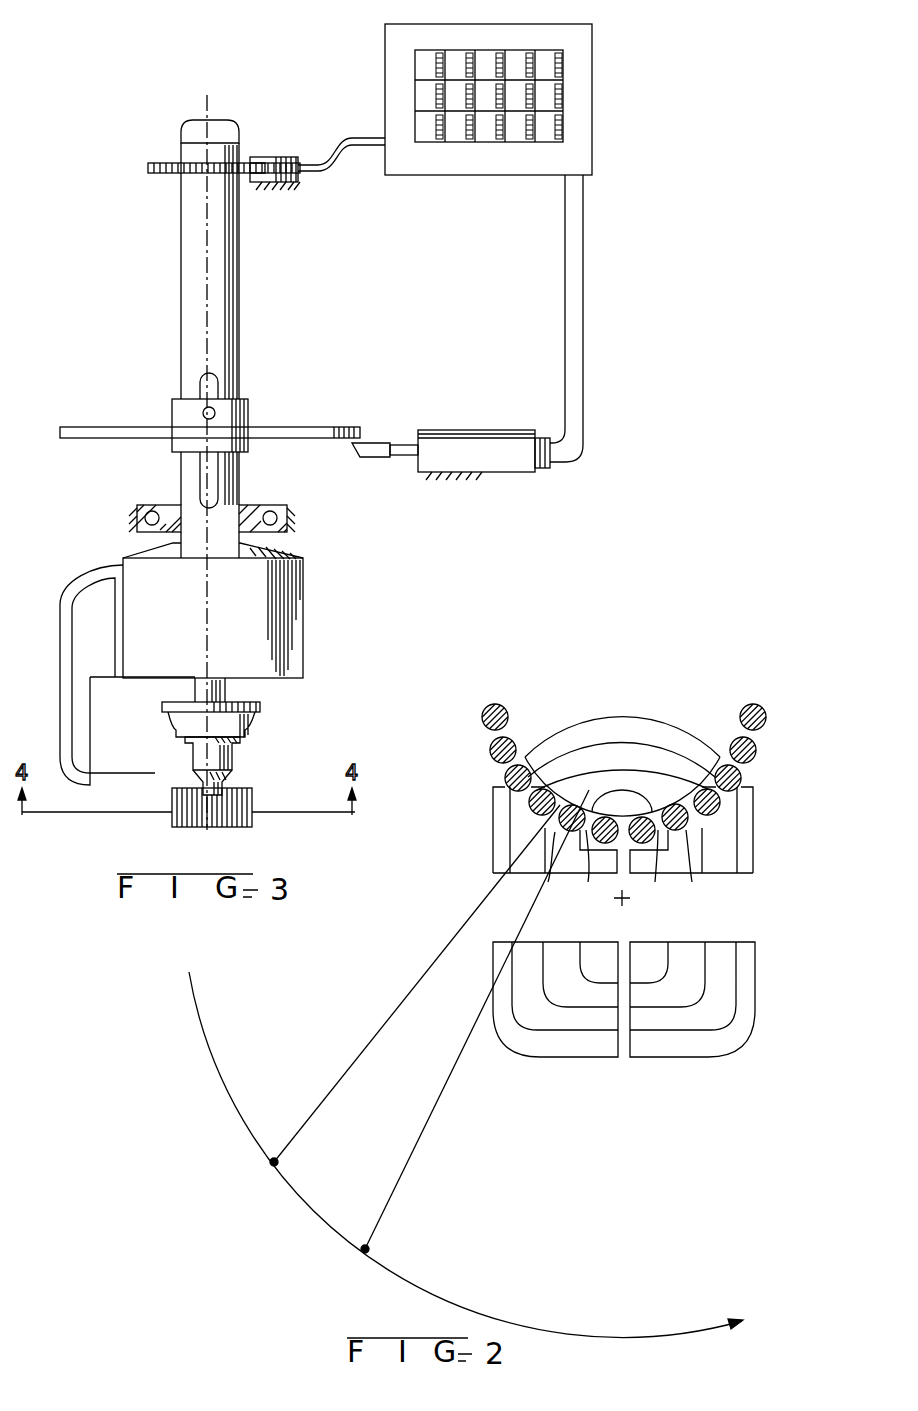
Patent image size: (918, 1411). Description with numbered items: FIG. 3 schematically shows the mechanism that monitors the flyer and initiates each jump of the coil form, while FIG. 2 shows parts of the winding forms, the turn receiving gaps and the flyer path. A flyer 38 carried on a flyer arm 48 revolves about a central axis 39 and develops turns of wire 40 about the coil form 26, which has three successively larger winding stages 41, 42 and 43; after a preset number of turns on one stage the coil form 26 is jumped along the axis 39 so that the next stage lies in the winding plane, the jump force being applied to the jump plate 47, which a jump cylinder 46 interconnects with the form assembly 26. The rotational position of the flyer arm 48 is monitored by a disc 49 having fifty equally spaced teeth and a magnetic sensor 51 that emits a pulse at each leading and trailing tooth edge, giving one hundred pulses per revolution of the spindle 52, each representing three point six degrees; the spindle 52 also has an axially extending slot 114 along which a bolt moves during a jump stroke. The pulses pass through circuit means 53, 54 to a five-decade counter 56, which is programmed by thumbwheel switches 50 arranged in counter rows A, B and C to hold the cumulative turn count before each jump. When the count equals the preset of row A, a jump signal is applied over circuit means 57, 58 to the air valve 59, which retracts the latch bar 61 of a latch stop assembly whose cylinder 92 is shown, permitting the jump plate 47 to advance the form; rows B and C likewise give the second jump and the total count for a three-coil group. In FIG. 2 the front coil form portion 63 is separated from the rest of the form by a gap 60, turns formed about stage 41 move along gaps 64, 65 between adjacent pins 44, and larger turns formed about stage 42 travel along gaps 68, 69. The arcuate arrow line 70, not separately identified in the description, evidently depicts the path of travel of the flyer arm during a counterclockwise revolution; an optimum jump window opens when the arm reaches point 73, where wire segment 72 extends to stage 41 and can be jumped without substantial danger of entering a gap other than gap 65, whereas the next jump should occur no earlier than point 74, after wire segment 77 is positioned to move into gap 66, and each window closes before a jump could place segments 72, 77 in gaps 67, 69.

In FIG. 3, the coil form 26 is at (211, 736).
In FIG. 2, the coil form 26 is at (762, 882).
In FIG. 3, the flyer 38 is at (303, 597).
In FIG. 3, the central axis 39 is at (207, 632).
In FIG. 2, the central axis 39 is at (624, 900).
In FIG. 3, the turns of wire 40 is at (152, 777).
In FIG. 3, the winding stage 41 is at (232, 772).
In FIG. 2, the winding stage 41 is at (608, 795).
In FIG. 3, the winding stage 42 is at (243, 742).
In FIG. 2, the winding stage 42 is at (603, 772).
In FIG. 3, the winding stage 43 is at (258, 712).
In FIG. 2, the winding stage 43 is at (603, 752).
In FIG. 3, the tooling members 44 is at (175, 815).
In FIG. 2, the tooling members 44 is at (766, 710).
In FIG. 3, the jump cylinder 46 is at (195, 690).
In FIG. 3, the jump plate 47 is at (270, 427).
In FIG. 3, the flyer arm 48 is at (62, 748).
In FIG. 3, the disc 49 is at (170, 163).
In FIG. 3, the thumbwheel switches 50 is at (440, 58).
In FIG. 3, the magnetic sensor 51 is at (290, 157).
In FIG. 3, the spindle 52 is at (240, 298).
In FIG. 3, the circuit means 53 is at (365, 138).
In FIG. 3, the circuit means 54 is at (370, 146).
In FIG. 3, the counter 56 is at (592, 38).
In FIG. 3, the circuit means 57 is at (565, 308).
In FIG. 3, the circuit means 58 is at (583, 310).
In FIG. 3, the air valve 59 is at (540, 438).
In FIG. 2, the gap 60 is at (744, 770).
In FIG. 3, the latch bar 61 is at (370, 443).
In FIG. 2, the front coil form portion 63 is at (610, 720).
In FIG. 2, the gap 64 is at (653, 865).
In FIG. 2, the gap 65 is at (574, 865).
In FIG. 2, the gap 66 is at (535, 866).
In FIG. 2, the gap 67 is at (693, 865).
In FIG. 2, the gap 68 is at (548, 800).
In FIG. 2, the gap 69 is at (730, 790).
In FIG. 2, the arcuate path 70 is at (535, 1318).
In FIG. 2, the wire segment 72 is at (440, 1108).
In FIG. 2, the point 73 is at (360, 1250).
In FIG. 2, the point 74 is at (270, 1164).
In FIG. 2, the wire segment 77 is at (362, 1056).
In FIG. 3, the cylinder 92 is at (488, 430).
In FIG. 3, the slot 114 is at (213, 488).
In FIG. 3, the counter row A is at (563, 66).
In FIG. 3, the counter row B is at (563, 96).
In FIG. 3, the counter row C is at (563, 127).